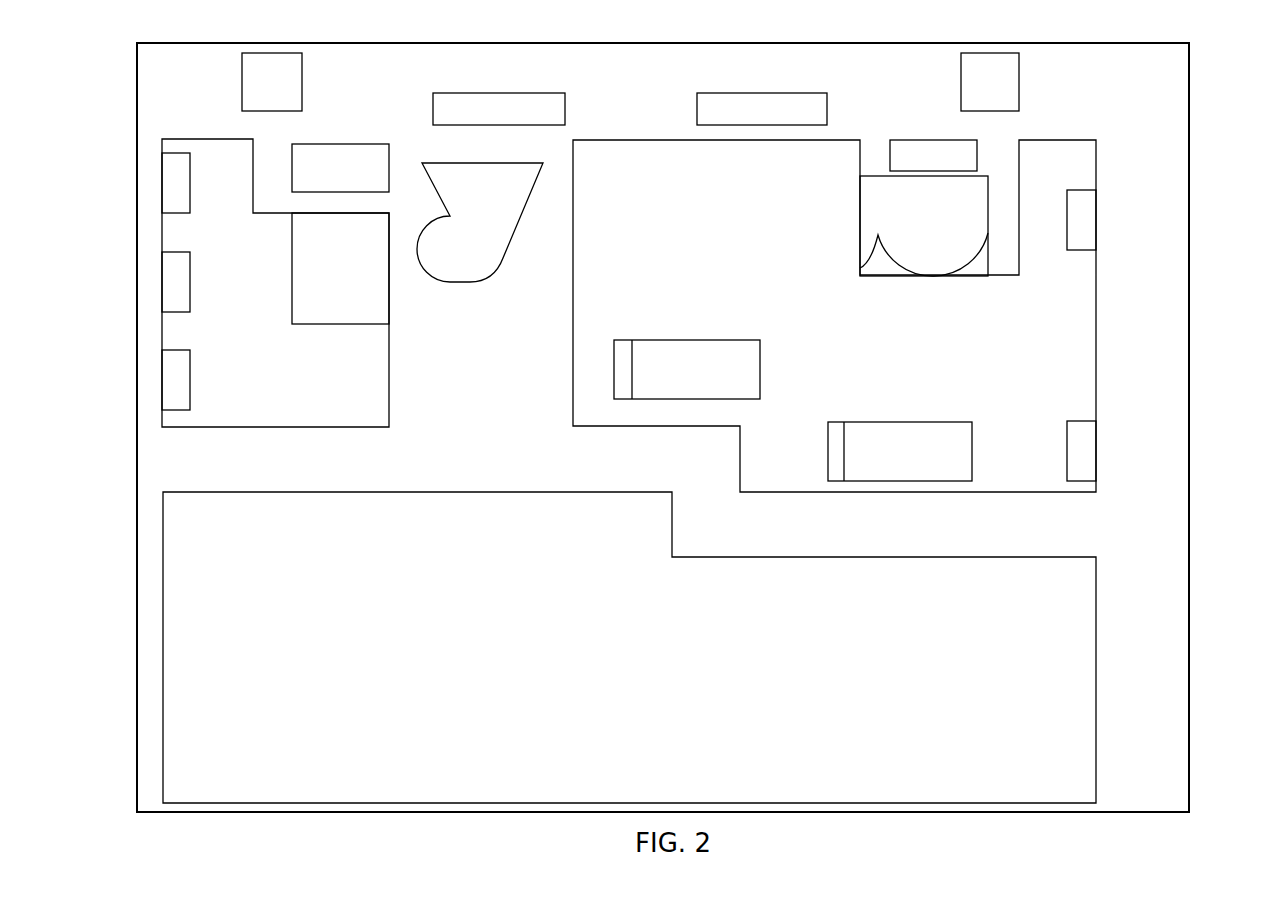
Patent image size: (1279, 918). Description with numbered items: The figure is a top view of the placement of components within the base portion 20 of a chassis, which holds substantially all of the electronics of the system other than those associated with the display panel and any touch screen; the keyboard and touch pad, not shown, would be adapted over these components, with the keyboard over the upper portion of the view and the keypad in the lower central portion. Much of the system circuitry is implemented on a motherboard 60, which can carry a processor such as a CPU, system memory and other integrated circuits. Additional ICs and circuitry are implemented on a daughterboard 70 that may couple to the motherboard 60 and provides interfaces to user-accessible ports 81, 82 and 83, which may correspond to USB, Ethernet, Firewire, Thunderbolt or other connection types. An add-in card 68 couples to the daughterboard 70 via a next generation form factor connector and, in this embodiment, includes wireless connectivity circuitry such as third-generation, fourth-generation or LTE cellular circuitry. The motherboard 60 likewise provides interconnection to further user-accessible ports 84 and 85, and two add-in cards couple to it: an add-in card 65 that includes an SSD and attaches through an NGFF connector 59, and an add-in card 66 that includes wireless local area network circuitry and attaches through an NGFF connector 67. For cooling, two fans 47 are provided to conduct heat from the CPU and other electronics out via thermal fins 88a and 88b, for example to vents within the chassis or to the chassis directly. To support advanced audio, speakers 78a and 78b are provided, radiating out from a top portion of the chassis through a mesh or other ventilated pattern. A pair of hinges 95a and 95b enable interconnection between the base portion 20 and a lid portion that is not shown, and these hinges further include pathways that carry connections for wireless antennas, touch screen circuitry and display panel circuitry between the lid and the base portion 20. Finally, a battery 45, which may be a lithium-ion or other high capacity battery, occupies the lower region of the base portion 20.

The base portion 20 is at (1204, 90).
The battery 45 is at (617, 690).
The fans 47 is at (500, 242).
The NGFF connector 59 is at (623, 338).
The motherboard 60 is at (705, 272).
The add-in card 65 is at (760, 368).
The add-in card 66 is at (908, 422).
The NGFF connector 67 is at (837, 422).
The add-in card 68 is at (375, 307).
The daughterboard 70 is at (272, 411).
The speaker 78a is at (340, 144).
The speaker 78b is at (890, 148).
The port 81 is at (173, 183).
The port 82 is at (173, 283).
The port 83 is at (173, 381).
The port 84 is at (1085, 220).
The port 85 is at (1085, 450).
The thermal fin 88a is at (500, 93).
The thermal fin 88b is at (763, 93).
The hinge 95a is at (302, 82).
The hinge 95b is at (1019, 82).